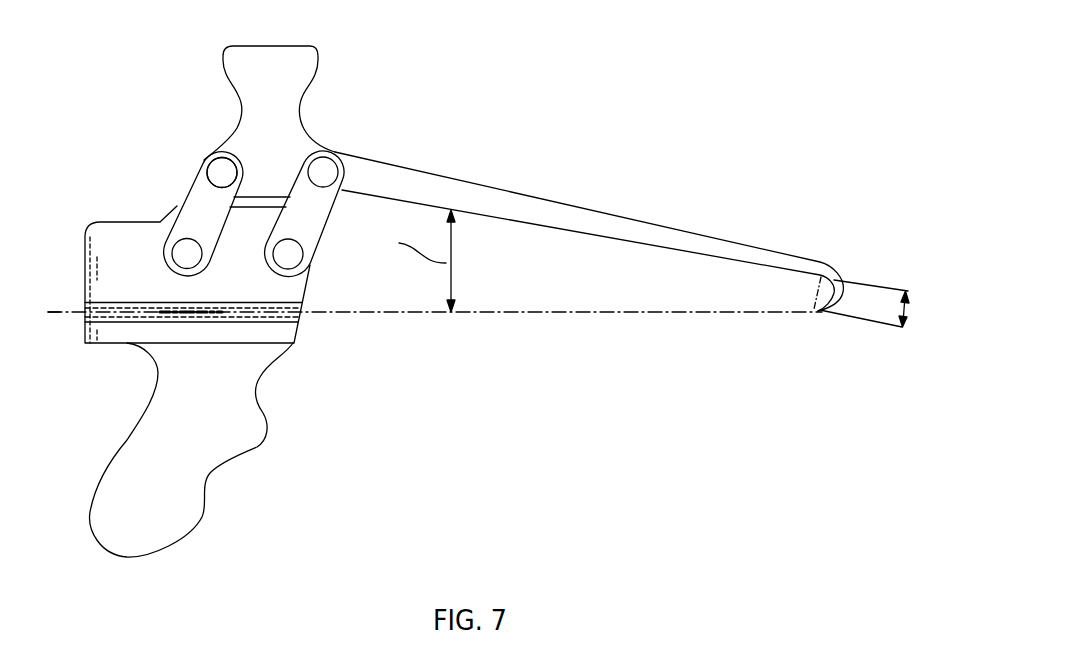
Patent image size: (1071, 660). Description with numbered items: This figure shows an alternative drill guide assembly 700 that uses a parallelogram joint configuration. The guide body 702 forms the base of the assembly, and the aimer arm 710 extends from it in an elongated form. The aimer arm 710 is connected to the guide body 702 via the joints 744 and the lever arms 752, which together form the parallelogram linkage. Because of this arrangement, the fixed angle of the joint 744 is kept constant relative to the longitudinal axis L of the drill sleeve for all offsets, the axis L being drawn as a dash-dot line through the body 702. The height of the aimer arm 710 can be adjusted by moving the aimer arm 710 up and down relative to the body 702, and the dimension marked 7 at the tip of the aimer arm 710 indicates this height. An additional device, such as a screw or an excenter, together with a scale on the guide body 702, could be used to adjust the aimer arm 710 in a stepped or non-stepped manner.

The drill guide assembly 700 is at (764, 148).
The guide body 702 is at (119, 240).
The aimer arm 710 is at (425, 192).
The joint 744 is at (219, 166).
The lever arm 752 is at (205, 200).
The tip height dimension 7 is at (906, 310).
The longitudinal axis L is at (63, 311).